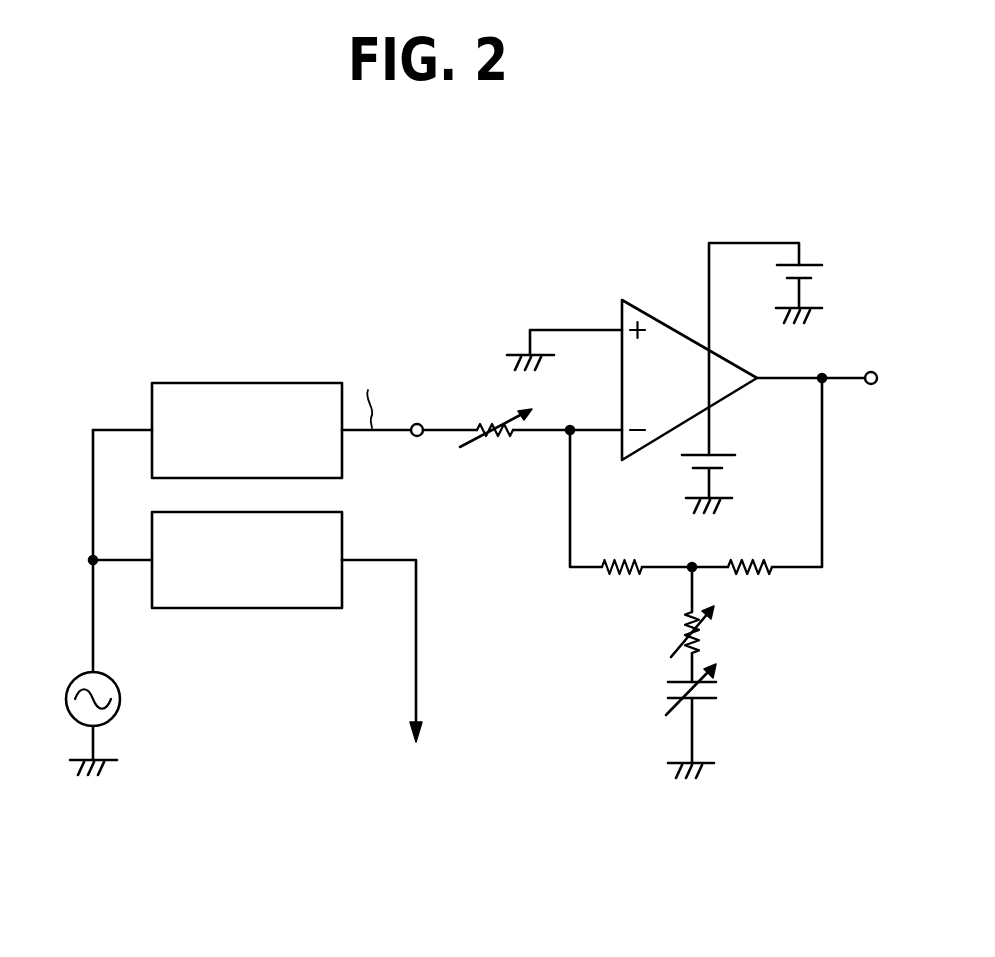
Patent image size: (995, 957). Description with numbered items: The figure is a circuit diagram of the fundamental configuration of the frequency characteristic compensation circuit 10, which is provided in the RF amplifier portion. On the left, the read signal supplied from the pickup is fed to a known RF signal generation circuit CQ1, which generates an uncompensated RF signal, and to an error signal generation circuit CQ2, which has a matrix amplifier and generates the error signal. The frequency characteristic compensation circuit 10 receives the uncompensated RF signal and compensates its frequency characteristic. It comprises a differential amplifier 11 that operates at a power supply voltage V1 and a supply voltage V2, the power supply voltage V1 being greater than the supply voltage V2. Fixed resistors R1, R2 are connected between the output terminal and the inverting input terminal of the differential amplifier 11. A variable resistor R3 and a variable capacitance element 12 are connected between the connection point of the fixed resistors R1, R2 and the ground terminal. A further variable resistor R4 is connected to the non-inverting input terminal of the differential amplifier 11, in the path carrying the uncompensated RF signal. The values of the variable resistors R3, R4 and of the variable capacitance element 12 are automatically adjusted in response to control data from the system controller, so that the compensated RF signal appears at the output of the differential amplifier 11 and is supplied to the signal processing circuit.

The frequency characteristic compensation circuit 10 is at (466, 239).
The differential amplifier 11 is at (655, 318).
The variable capacitance element 12 is at (706, 702).
The RF signal generation circuit CQ1 is at (275, 383).
The error signal generation circuit CQ2 is at (272, 609).
The fixed resistor R1 is at (622, 585).
The fixed resistor R2 is at (750, 585).
The variable resistor R3 is at (698, 650).
The variable resistor R4 is at (496, 441).
The power supply voltage V1 is at (817, 284).
The supply voltage V2 is at (726, 474).